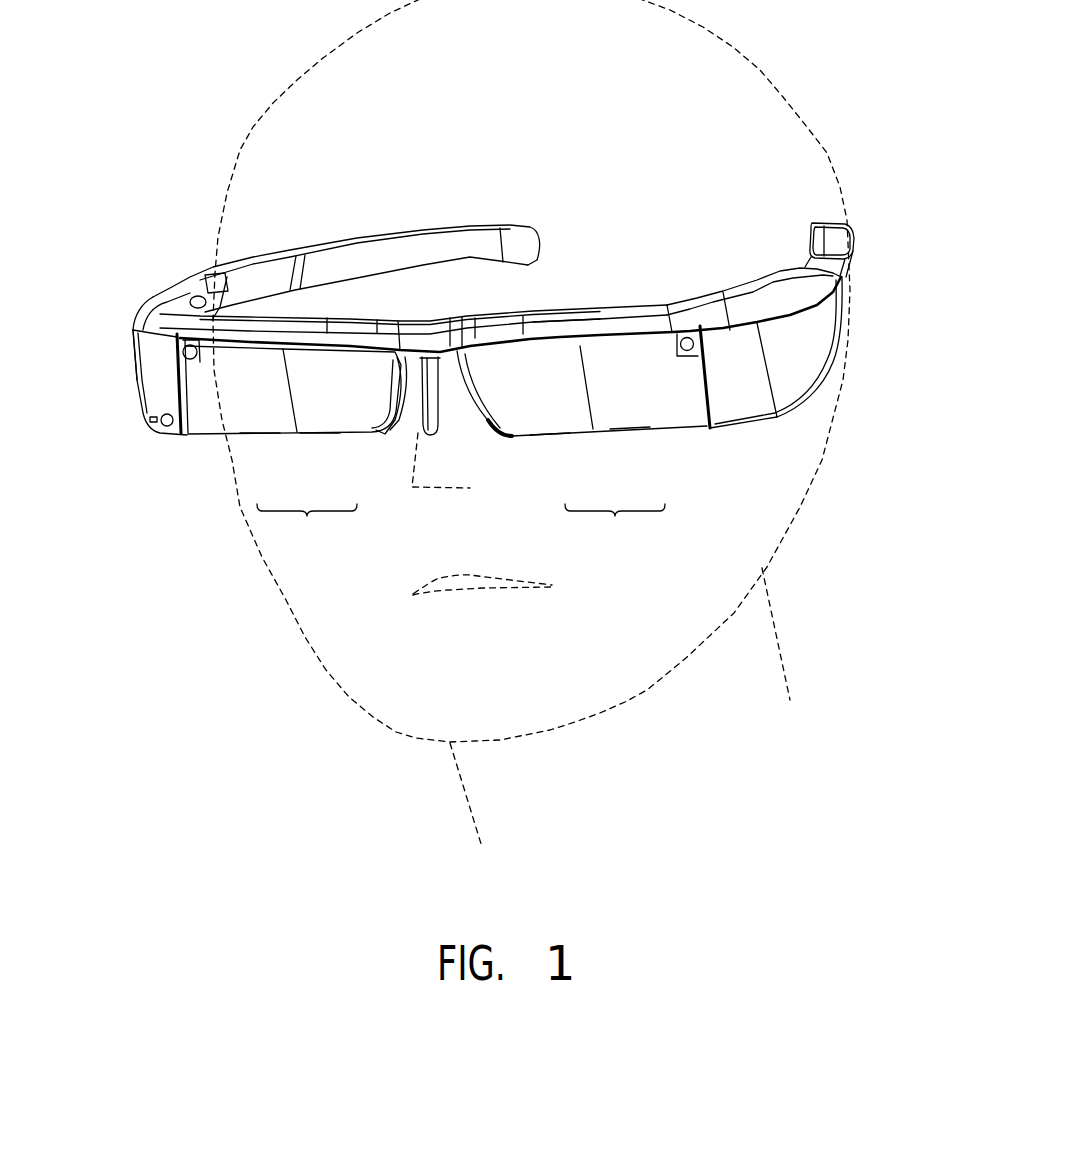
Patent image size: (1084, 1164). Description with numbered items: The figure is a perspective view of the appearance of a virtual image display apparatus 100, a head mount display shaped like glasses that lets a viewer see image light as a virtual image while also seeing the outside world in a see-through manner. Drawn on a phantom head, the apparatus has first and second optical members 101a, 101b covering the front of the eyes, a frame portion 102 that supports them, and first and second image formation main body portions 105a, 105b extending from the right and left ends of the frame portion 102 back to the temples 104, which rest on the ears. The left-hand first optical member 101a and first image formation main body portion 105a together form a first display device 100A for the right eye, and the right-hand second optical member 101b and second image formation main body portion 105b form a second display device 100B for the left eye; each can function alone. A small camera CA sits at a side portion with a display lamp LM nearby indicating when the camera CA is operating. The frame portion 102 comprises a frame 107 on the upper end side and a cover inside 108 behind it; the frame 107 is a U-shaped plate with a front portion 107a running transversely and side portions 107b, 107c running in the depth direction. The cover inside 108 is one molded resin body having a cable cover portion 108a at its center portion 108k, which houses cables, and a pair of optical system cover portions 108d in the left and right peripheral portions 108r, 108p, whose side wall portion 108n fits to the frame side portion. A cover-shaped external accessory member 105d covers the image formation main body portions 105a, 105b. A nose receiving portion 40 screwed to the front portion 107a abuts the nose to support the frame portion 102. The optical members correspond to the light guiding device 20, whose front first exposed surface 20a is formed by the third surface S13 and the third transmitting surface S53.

The virtual image display apparatus 100 is at (852, 55).
The first display device 100A is at (224, 448).
The second display device 100B is at (662, 446).
The first optical member 101a is at (368, 440).
The second optical member 101b is at (553, 432).
The light guiding device 20 is at (414, 483).
The first exposed surface 20a is at (461, 525).
The frame portion 102 is at (583, 318).
The temple 104 is at (338, 256).
The first image formation main body portion 105a is at (140, 398).
The second image formation main body portion 105b is at (718, 412).
The external accessory member 105d is at (150, 313).
The frame 107 is at (350, 330).
The front portion 107a is at (433, 321).
The side portion 107b is at (187, 282).
The side portion 107c is at (720, 294).
The cover inside 108 is at (557, 310).
The cable cover portion 108a is at (580, 322).
The optical system cover portion 108d is at (232, 285).
The center portion 108k is at (550, 276).
The side wall portion 108n is at (280, 260).
The peripheral portion 108p is at (704, 169).
The peripheral portion 108r is at (291, 165).
The nose receiving portion 40 is at (496, 440).
The third surface S13 is at (260, 413).
The third transmitting surface S53 is at (330, 413).
The display lamp LM is at (151, 424).
The camera CA is at (174, 428).